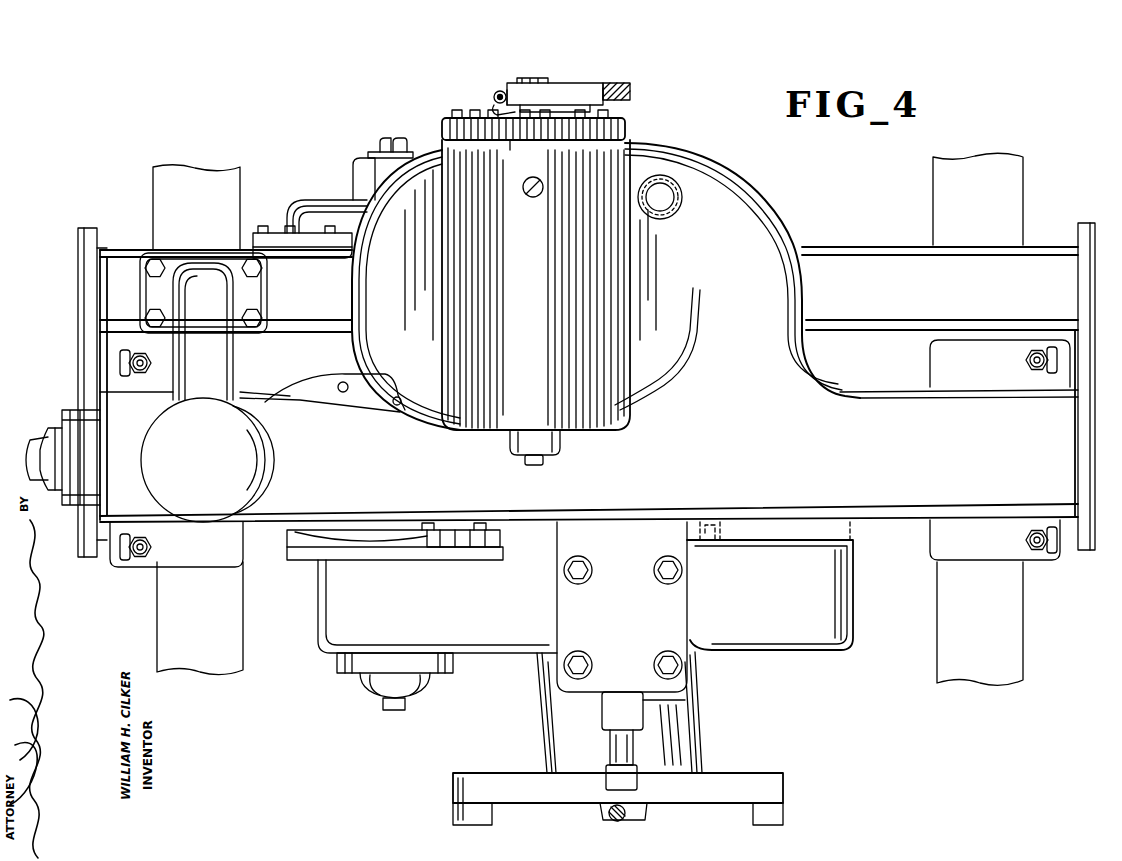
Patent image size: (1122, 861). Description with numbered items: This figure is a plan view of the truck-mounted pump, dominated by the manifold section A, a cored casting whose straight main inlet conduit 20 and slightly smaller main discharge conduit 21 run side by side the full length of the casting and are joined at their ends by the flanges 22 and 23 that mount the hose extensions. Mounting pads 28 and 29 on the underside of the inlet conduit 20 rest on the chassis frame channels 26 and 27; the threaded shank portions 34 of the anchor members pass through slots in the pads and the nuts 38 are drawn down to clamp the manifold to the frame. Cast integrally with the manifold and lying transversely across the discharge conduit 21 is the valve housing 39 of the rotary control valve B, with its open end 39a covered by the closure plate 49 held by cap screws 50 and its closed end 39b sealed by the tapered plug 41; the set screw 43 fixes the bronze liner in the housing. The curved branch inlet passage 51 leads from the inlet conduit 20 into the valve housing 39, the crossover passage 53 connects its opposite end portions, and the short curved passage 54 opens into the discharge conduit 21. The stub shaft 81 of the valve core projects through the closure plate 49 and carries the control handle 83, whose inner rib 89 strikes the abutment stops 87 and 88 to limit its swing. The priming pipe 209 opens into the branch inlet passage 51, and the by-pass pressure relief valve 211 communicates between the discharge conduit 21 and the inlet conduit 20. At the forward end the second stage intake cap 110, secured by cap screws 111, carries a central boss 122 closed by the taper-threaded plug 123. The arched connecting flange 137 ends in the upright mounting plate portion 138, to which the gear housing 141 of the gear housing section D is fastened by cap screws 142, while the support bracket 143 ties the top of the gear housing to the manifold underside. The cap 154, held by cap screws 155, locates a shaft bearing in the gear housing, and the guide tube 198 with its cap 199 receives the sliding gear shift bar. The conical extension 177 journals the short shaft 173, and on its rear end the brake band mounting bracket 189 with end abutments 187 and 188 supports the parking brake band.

The main inlet conduit 20 is at (690, 462).
The main discharge conduit 21 is at (318, 297).
The flange 22 is at (78, 287).
The flange 23 is at (1085, 435).
The frame channel 26 is at (200, 644).
The frame channel 27 is at (982, 649).
The mounting pad 28 is at (218, 556).
The mounting pad 29 is at (962, 548).
The shank portion 34 is at (150, 368).
The nut 38 is at (145, 358).
The valve housing 39 is at (542, 314).
The open end of valve housing 39a is at (526, 152).
The closed end of valve housing 39b is at (485, 436).
The tapered threaded plug 41 is at (548, 466).
The set screw 43 is at (530, 197).
The closure plate 49 is at (628, 132).
The cap screws 50 is at (603, 112).
The branch inlet passage 51 is at (765, 297).
The crossover passage 53 is at (395, 195).
The short curved passage 54 is at (660, 367).
The stub shaft 81 is at (527, 82).
The valve control handle 83 is at (607, 86).
The abutment stop 87 is at (630, 86).
The abutment stop 88 is at (492, 100).
The rib 89 is at (558, 103).
The second stage intake cap 110 is at (303, 207).
The cap screws 111 is at (276, 208).
The boss 122 is at (372, 168).
The taper-threaded plug 123 is at (390, 138).
The gear housing connecting flange 137 is at (408, 540).
The upright mounting plate portion 138 is at (457, 545).
The gear housing 141 is at (442, 616).
The cap screws 142 is at (482, 522).
The gear housing support bracket 143 is at (632, 616).
The cap 154 is at (345, 666).
The cap screws 155 is at (360, 682).
The short shaft 173 is at (613, 808).
The conical extension 177 is at (542, 733).
The end abutment 187 is at (770, 820).
The end abutment 188 is at (480, 810).
The brake band mounting bracket 189 is at (765, 770).
The guide tube 198 is at (616, 742).
The cap 199 is at (628, 782).
The pipe 209 is at (680, 212).
The pressure relief valve 211 is at (268, 440).
The manifold section A is at (778, 199).
The rotary control valve B is at (498, 81).
The gear housing section D is at (729, 664).